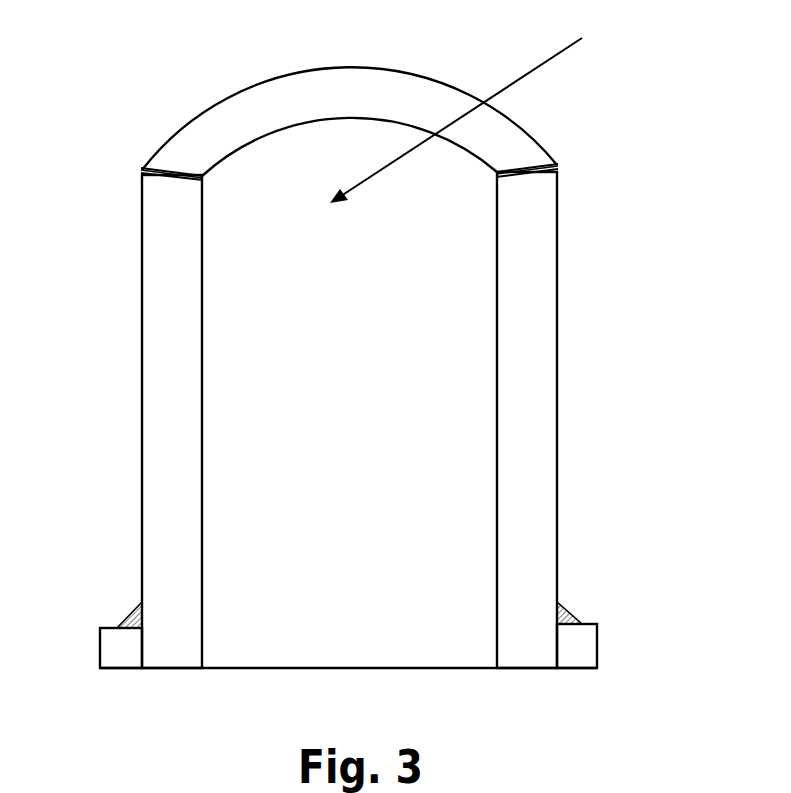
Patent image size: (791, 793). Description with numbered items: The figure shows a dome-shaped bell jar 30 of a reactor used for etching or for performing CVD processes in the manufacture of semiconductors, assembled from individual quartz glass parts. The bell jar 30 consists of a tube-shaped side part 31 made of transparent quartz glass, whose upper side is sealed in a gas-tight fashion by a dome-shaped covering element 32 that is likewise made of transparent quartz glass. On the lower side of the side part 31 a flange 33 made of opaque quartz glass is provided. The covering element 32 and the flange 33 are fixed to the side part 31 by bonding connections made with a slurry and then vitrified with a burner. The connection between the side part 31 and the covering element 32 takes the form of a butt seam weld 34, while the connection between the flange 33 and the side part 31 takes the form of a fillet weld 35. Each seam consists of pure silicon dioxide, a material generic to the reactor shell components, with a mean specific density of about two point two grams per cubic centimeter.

The bell jar 30 is at (582, 347).
The side part 31 is at (160, 445).
The covering element 32 is at (470, 106).
The flange 33 is at (115, 655).
The butt seam weld 34 is at (142, 168).
The fillet weld 35 is at (563, 615).